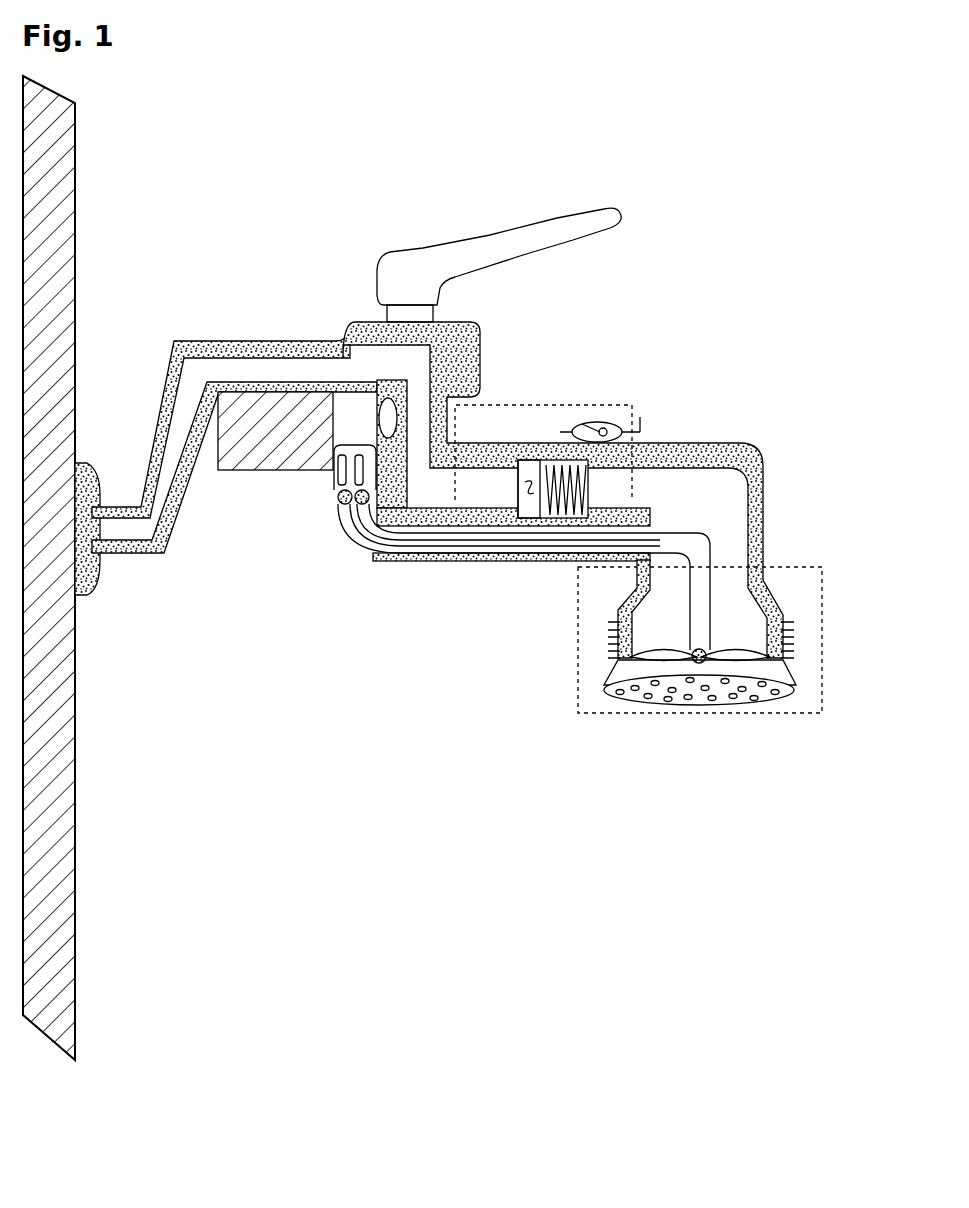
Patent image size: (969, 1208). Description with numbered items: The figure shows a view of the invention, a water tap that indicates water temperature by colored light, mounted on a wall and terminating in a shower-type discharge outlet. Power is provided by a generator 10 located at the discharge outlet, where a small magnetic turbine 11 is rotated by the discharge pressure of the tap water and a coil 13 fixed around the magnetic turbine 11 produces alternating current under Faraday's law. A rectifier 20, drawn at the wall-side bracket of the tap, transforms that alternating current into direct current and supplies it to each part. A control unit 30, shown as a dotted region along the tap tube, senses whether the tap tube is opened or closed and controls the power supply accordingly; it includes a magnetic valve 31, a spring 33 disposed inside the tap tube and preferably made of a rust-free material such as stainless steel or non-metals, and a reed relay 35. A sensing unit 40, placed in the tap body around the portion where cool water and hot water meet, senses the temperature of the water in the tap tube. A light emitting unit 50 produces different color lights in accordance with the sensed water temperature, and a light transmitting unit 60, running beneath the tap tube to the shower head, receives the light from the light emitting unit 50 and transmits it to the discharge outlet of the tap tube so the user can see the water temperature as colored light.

The generator 10 is at (706, 659).
The magnetic turbine 11 is at (612, 683).
The coil 13 is at (607, 636).
The rectifier 20 is at (233, 471).
The control unit 30 is at (523, 404).
The magnetic valve 31 is at (468, 528).
The spring 33 is at (643, 493).
The reed relay 35 is at (597, 421).
The sensing unit 40 is at (378, 397).
The light emitting unit 50 is at (338, 504).
The light transmitting unit 60 is at (712, 541).